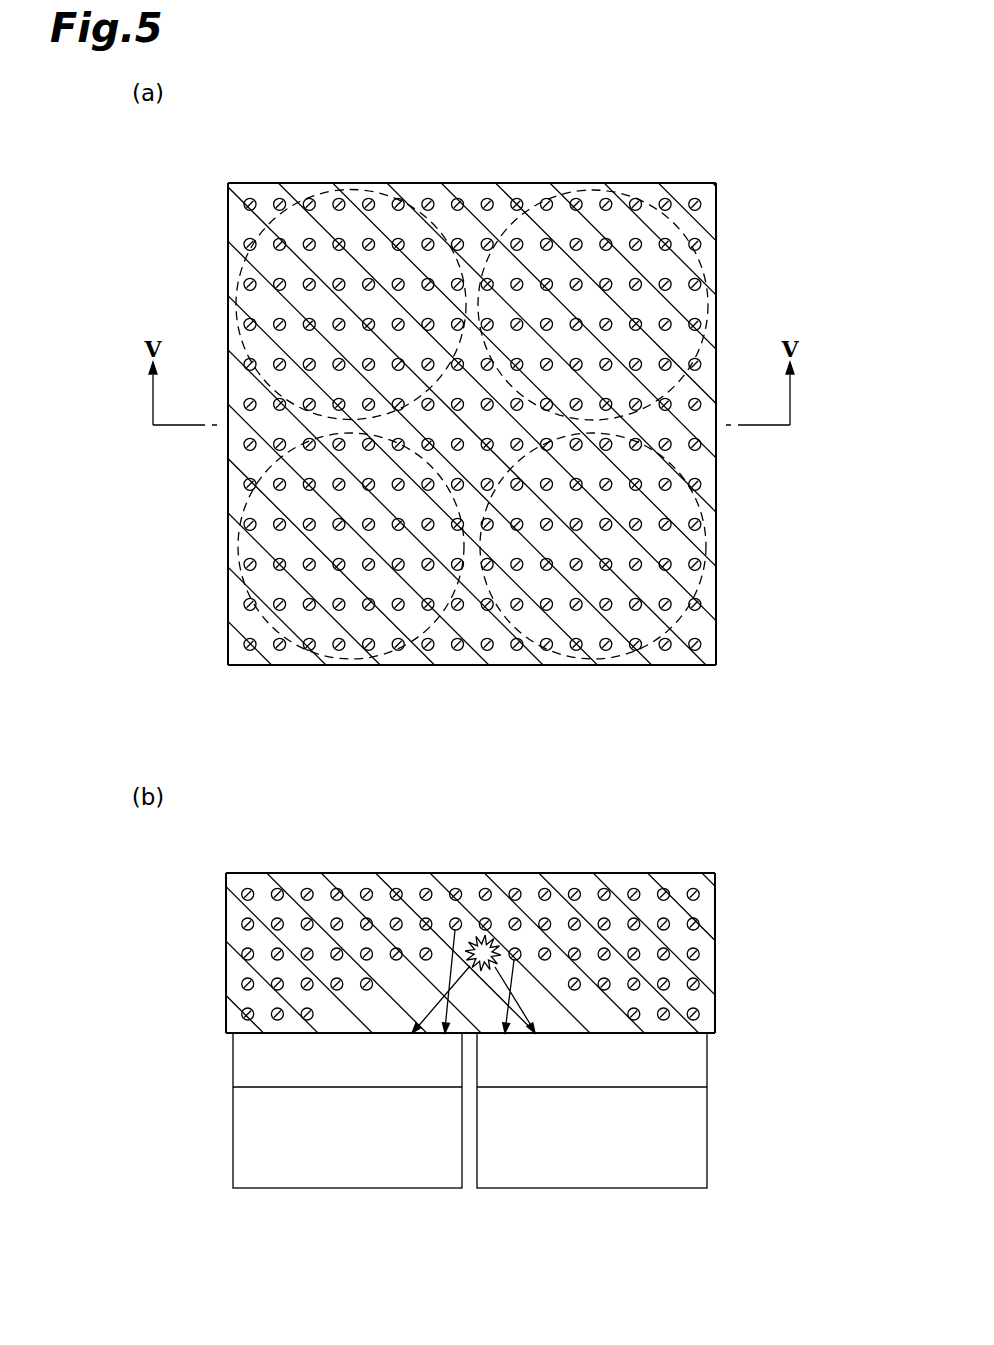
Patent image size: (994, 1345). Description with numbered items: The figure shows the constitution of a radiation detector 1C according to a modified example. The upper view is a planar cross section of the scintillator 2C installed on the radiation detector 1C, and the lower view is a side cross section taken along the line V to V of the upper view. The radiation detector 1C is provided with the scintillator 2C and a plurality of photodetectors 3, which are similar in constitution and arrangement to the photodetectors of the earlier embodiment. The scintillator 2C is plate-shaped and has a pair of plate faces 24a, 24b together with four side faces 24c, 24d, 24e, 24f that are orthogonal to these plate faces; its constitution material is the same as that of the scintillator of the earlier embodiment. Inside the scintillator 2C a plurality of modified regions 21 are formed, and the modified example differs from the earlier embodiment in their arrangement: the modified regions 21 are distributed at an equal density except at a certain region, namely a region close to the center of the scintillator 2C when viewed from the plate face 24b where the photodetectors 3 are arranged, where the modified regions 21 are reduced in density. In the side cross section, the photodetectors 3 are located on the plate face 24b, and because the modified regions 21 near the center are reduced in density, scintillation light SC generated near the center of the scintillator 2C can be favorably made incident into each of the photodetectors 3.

The radiation detector 1C is at (470, 672).
The scintillator 2C is at (470, 672).
The photodetector 3 is at (327, 186).
The modified region 21 is at (458, 199).
The plate face 24a is at (505, 873).
The plate face 24b is at (520, 1036).
The side face 24c is at (716, 480).
The side face 24d is at (228, 479).
The side face 24e is at (508, 183).
The side face 24f is at (513, 665).
The scintillation light SC is at (480, 938).